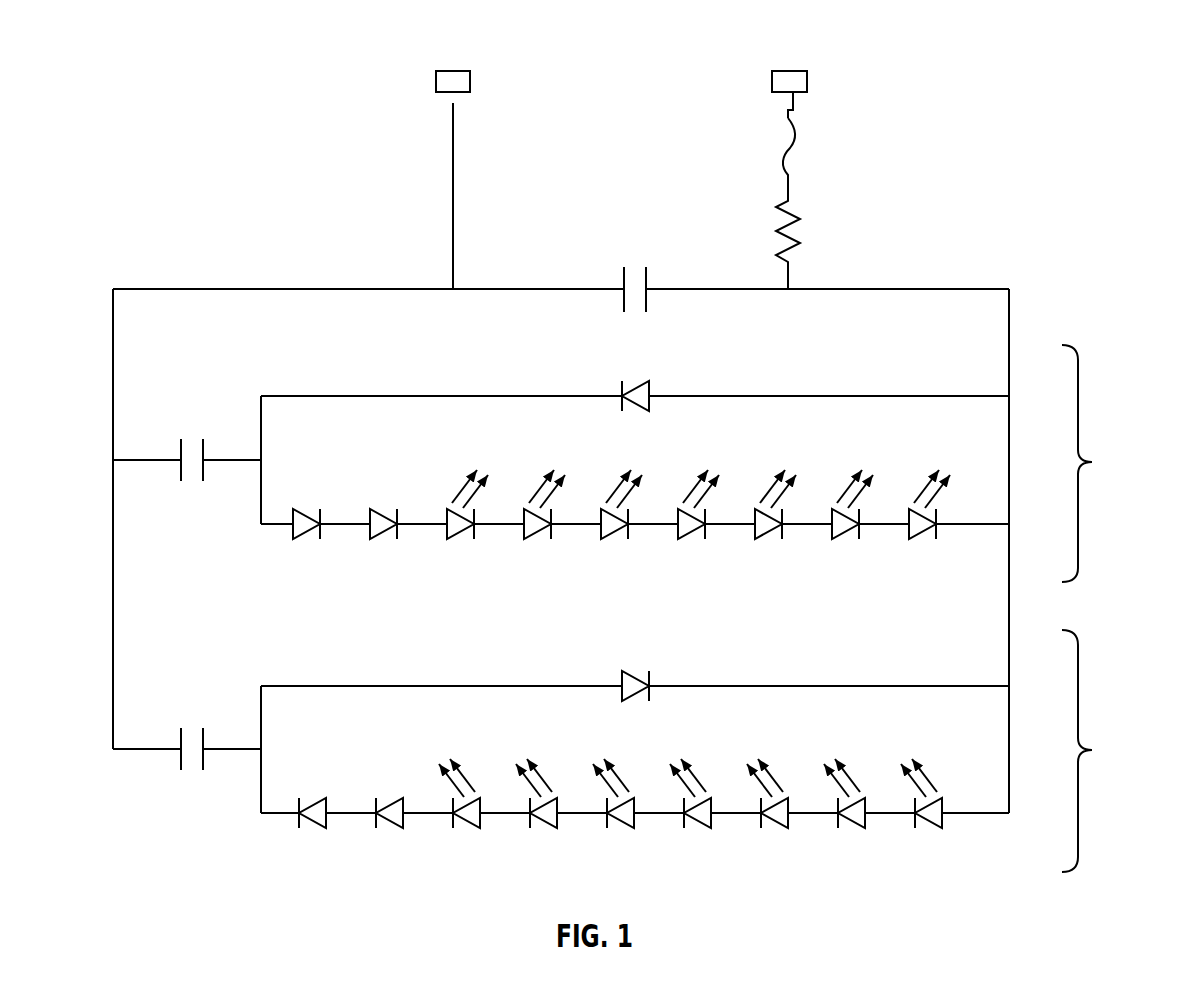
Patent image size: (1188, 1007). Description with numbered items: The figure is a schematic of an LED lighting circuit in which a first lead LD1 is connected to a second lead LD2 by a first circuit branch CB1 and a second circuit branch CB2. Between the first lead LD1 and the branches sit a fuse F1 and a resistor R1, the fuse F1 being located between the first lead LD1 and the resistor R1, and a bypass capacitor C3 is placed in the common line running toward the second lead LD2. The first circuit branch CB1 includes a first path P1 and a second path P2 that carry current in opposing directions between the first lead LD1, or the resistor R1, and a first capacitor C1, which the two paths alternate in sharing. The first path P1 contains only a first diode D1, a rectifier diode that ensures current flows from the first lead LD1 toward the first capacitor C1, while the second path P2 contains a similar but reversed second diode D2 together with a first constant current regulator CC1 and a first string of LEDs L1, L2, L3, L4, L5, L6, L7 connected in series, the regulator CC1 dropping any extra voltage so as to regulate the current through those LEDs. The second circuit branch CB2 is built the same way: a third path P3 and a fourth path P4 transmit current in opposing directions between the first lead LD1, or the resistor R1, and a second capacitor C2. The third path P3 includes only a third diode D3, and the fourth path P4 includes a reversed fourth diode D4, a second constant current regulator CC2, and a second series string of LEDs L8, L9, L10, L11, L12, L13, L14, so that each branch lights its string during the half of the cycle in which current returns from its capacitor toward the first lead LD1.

The first lead LD1 is at (793, 60).
The second lead LD2 is at (457, 60).
The fuse F1 is at (804, 141).
The resistor R1 is at (808, 231).
The first capacitor C1 is at (194, 438).
The second capacitor C2 is at (194, 728).
The bypass capacitor C3 is at (634, 272).
The first diode D1 is at (646, 357).
The second diode D2 is at (309, 539).
The third diode D3 is at (646, 650).
The fourth diode D4 is at (311, 829).
The first constant current regulator CC1 is at (386, 539).
The second constant current regulator CC2 is at (388, 829).
The LED L1 is at (463, 539).
The LED L2 is at (540, 539).
The LED L3 is at (617, 539).
The LED L4 is at (694, 539).
The LED L5 is at (771, 539).
The LED L6 is at (848, 539).
The LED L7 is at (925, 539).
The LED L8 is at (927, 829).
The LED L9 is at (849, 829).
The LED L10 is at (772, 829).
The LED L11 is at (695, 829).
The LED L12 is at (618, 829).
The LED L13 is at (541, 829).
The LED L14 is at (464, 829).
The first path P1 is at (984, 390).
The second path P2 is at (985, 531).
The third path P3 is at (984, 680).
The fourth path P4 is at (985, 822).
The first circuit branch CB1 is at (1102, 463).
The second circuit branch CB2 is at (1102, 751).